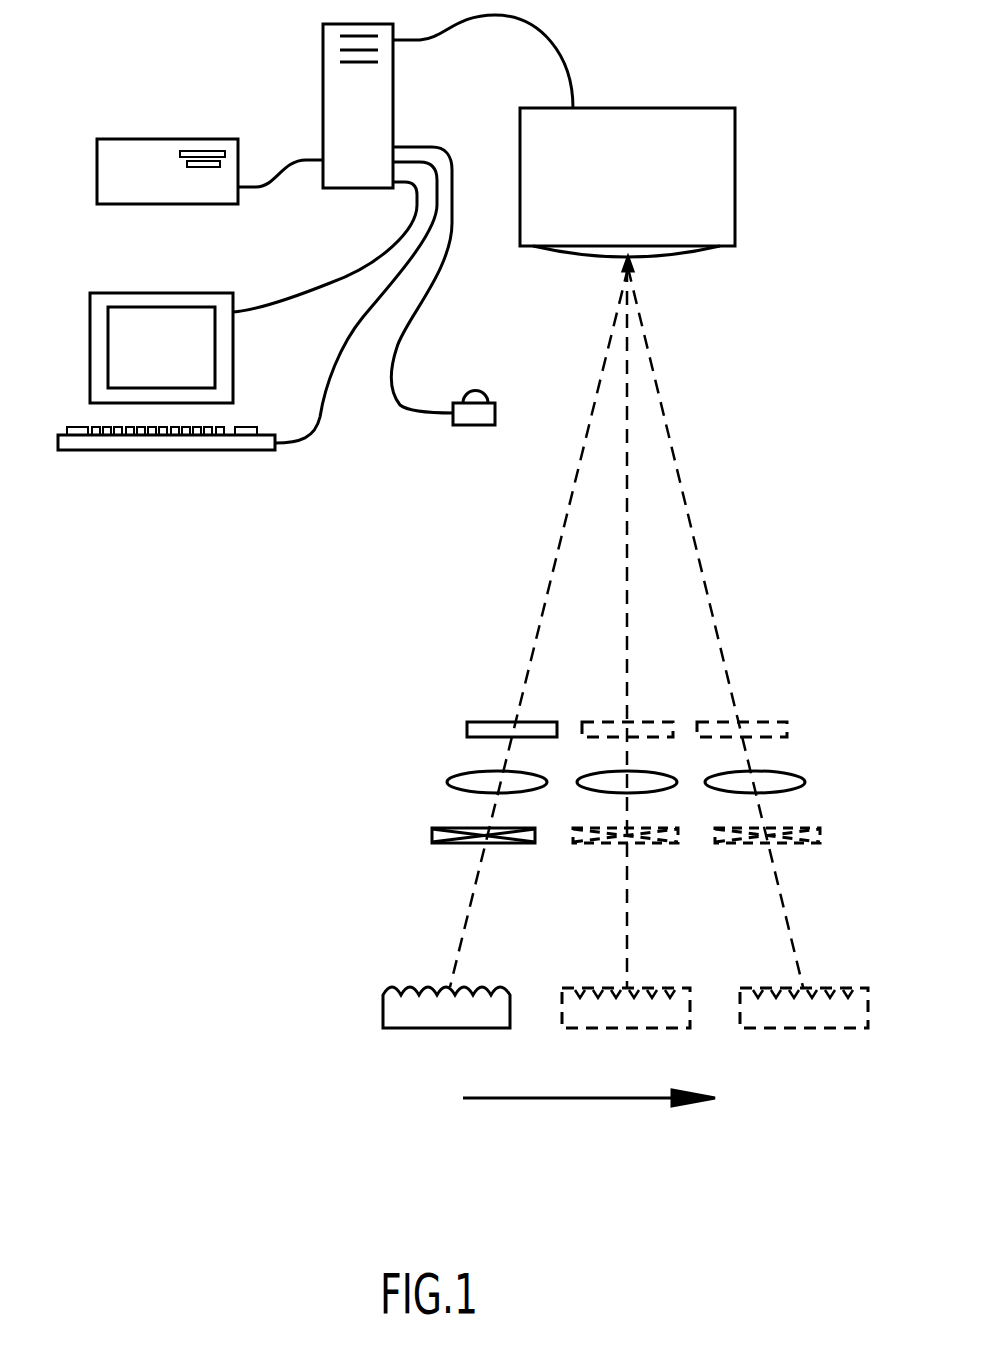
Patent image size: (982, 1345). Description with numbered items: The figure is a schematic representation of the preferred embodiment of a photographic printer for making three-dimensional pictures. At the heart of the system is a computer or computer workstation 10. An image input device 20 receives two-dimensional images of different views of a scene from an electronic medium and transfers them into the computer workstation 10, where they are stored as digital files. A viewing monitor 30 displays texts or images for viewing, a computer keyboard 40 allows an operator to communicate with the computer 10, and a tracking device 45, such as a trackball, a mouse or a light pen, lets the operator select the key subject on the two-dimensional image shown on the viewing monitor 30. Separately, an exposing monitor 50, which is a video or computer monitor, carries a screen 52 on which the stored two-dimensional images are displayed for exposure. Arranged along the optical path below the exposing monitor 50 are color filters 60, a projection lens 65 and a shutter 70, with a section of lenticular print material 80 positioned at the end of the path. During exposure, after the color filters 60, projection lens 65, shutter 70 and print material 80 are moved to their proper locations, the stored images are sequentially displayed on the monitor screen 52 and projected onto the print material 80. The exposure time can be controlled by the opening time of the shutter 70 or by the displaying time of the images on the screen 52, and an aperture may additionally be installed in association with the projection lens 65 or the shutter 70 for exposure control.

The computer workstation 10 is at (333, 89).
The image input device 20 is at (120, 146).
The viewing monitor 30 is at (100, 300).
The computer keyboard 40 is at (107, 445).
The tracking device 45 is at (483, 418).
The exposing monitor 50 is at (718, 118).
The monitor screen 52 is at (648, 253).
The color filters 60 is at (475, 722).
The projection lens 65 is at (455, 777).
The shutter 70 is at (435, 835).
The lenticular print material 80 is at (383, 995).